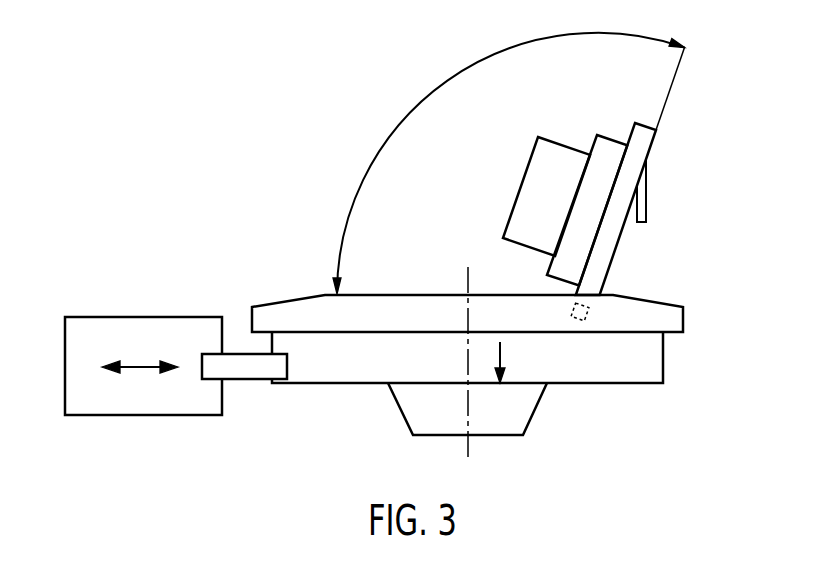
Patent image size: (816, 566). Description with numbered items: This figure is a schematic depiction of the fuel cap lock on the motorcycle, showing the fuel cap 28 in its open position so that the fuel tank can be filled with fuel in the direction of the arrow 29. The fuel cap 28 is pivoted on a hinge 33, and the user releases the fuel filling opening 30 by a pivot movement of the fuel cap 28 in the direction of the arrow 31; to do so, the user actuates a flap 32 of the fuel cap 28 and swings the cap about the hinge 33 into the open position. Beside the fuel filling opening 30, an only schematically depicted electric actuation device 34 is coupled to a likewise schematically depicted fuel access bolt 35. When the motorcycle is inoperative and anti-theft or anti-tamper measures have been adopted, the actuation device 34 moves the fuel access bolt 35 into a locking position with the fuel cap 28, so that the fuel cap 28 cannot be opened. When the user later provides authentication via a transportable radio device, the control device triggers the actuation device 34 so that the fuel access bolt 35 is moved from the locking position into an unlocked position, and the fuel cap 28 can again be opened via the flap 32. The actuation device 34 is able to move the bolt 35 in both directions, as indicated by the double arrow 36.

The fuel cap 28 is at (695, 167).
The arrow 29 is at (502, 353).
The fuel filling opening 30 is at (417, 276).
The arrow 31 is at (413, 112).
The flap 32 is at (647, 204).
The hinge 33 is at (590, 315).
The electric actuation device 34 is at (90, 415).
The fuel access bolt 35 is at (247, 379).
The double arrow 36 is at (143, 367).